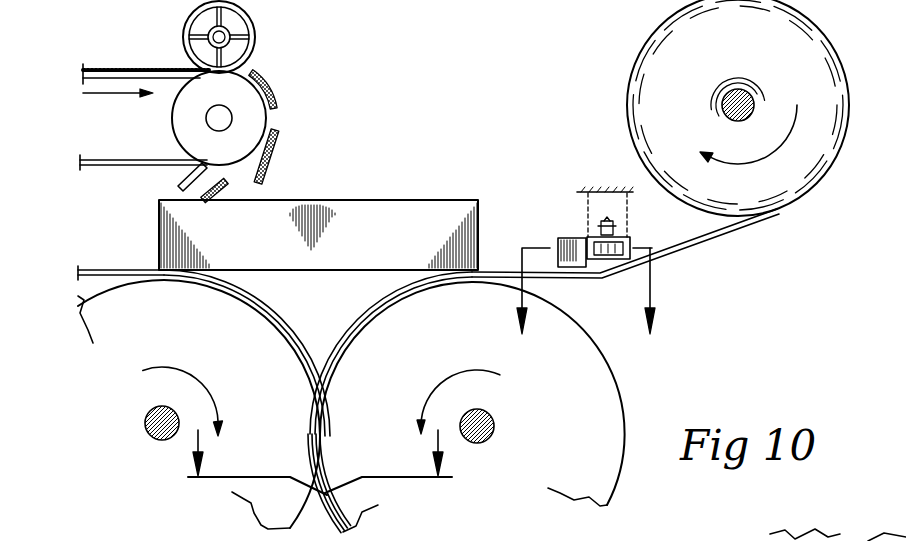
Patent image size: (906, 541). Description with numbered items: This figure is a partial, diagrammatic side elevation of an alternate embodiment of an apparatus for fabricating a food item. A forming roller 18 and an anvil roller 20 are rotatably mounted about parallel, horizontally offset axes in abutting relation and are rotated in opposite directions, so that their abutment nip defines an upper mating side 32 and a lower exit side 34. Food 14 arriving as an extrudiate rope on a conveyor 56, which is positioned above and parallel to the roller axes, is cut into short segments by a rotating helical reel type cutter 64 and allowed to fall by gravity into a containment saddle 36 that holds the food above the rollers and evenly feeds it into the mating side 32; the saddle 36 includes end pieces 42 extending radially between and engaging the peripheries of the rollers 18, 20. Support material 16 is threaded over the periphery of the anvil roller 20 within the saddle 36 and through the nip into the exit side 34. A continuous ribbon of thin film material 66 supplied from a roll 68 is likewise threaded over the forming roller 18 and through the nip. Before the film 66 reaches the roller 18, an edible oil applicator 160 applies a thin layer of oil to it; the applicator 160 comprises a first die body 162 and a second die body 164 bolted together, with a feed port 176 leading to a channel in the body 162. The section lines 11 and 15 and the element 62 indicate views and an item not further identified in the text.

The food 14 is at (92, 67).
The idler wheel 62 is at (257, 23).
The conveyor 56 is at (143, 151).
The cutter 64 is at (178, 187).
The containment saddle 36 is at (352, 200).
The end pieces 42 is at (360, 260).
The support material 16 is at (113, 264).
The anvil roller 20 is at (196, 339).
The upper mating side 32 is at (388, 353).
The lower exit side 34 is at (315, 468).
The forming roller 18 is at (565, 409).
The edible oil applicator 160 is at (572, 200).
The second die body 164 is at (550, 234).
The feed port 176 is at (588, 202).
The first die body 162 is at (668, 222).
The film material 66 is at (728, 229).
The roll 68 is at (668, 27).
The section line 11- 11 is at (594, 312).
The section line 15- 15 is at (319, 480).